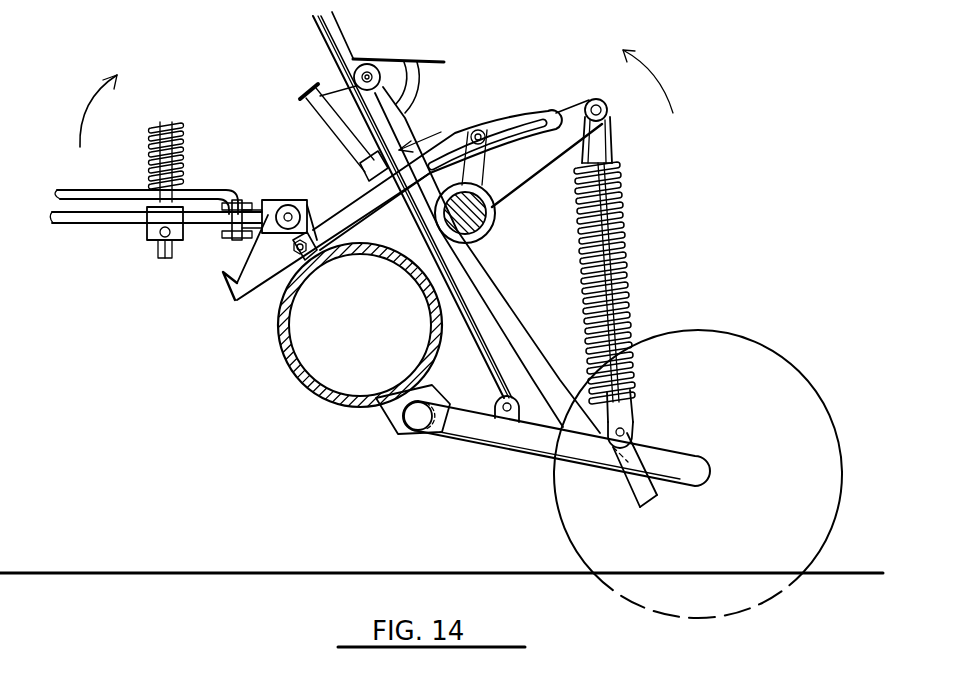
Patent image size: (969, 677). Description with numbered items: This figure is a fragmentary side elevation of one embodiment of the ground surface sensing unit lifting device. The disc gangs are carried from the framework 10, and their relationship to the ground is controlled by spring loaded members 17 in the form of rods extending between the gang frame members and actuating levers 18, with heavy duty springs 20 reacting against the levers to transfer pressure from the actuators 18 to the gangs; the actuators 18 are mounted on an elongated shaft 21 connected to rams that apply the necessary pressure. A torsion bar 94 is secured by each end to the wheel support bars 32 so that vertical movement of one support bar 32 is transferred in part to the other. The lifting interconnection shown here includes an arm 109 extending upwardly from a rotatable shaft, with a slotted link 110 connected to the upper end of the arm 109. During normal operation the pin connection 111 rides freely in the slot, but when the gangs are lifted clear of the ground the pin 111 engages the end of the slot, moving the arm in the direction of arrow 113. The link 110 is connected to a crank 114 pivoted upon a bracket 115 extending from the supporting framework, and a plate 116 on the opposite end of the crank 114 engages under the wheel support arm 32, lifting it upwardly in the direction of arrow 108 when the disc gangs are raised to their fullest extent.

The framework 10 is at (392, 262).
The spring loaded member 17 is at (616, 202).
The actuating lever 18 is at (510, 187).
The heavy duty spring 20 is at (616, 219).
The elongated shaft 21 is at (466, 213).
The wheel support bar 32 is at (100, 222).
The torsion bar 94 is at (98, 188).
The arrow 108 is at (90, 107).
The arm 109 is at (465, 133).
The slotted link 110 is at (351, 206).
The pin connection 111 is at (512, 163).
The arrow 113 is at (420, 138).
The crank 114 is at (260, 272).
The bracket 115 is at (295, 200).
The plate 116 is at (223, 277).